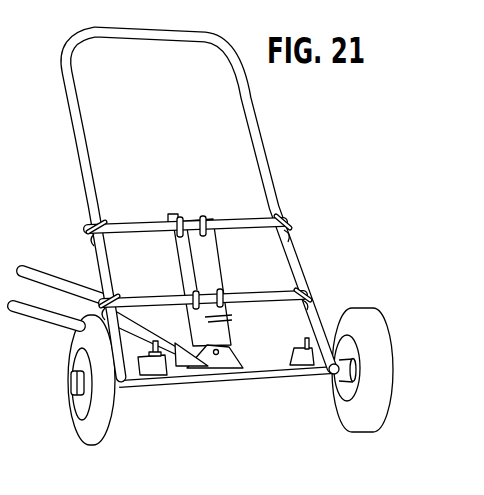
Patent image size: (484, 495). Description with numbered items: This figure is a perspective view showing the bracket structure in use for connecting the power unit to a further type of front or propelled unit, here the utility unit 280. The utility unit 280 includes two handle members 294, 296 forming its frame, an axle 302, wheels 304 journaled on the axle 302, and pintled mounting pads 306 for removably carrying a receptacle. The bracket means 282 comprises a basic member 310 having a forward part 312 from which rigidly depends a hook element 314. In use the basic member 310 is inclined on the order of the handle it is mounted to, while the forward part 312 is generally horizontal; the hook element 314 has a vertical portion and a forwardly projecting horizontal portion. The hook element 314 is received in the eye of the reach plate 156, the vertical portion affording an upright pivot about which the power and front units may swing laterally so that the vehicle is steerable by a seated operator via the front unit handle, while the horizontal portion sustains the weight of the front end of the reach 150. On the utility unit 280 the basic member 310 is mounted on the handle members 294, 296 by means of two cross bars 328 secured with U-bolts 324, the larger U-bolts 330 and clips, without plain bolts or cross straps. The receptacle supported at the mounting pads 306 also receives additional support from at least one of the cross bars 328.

The reach 150 is at (45, 258).
The reach plate 156 is at (186, 356).
The utility unit 280 is at (185, 204).
The bracket means 282 is at (160, 212).
The handle member 294 is at (77, 138).
The handle member 296 is at (253, 113).
The axle 302 is at (291, 374).
The wheels 304 is at (82, 431).
The pintled mounting pads 306 is at (153, 368).
The basic member 310 is at (214, 263).
The forward part 312 is at (229, 371).
The hook element 314 is at (243, 342).
The U-bolts 324 is at (203, 216).
The cross bars 328 is at (130, 298).
The U-bolts 330 is at (108, 297).